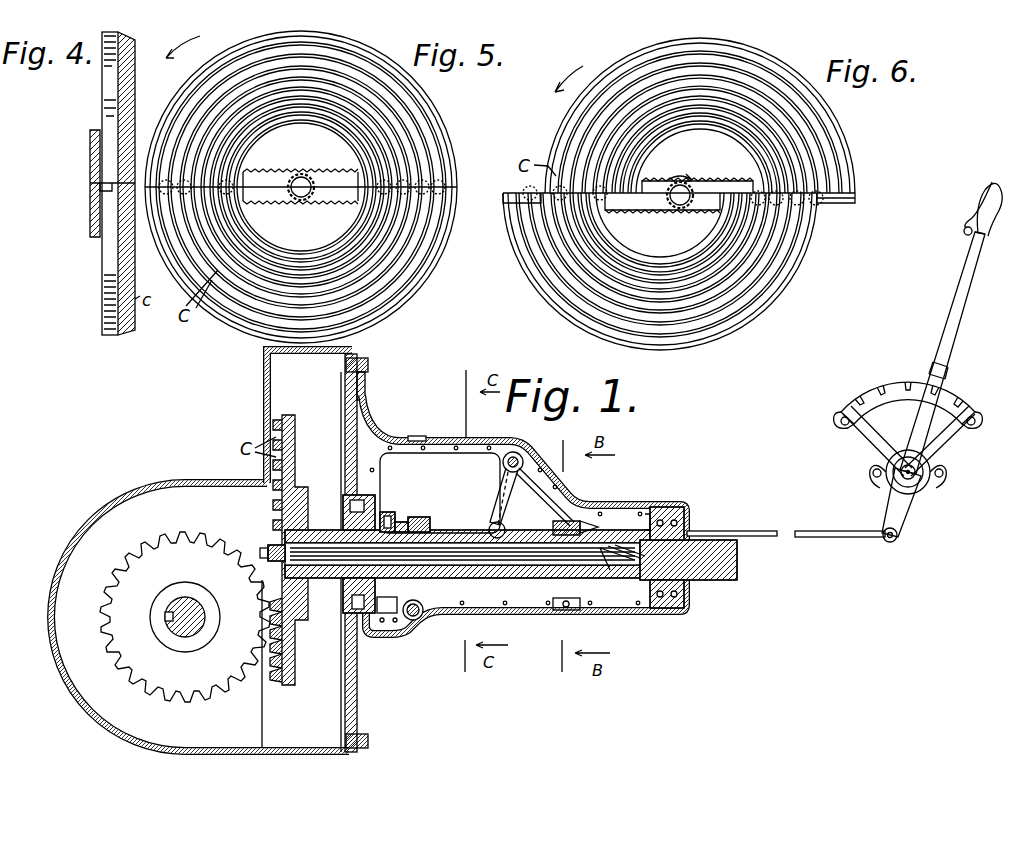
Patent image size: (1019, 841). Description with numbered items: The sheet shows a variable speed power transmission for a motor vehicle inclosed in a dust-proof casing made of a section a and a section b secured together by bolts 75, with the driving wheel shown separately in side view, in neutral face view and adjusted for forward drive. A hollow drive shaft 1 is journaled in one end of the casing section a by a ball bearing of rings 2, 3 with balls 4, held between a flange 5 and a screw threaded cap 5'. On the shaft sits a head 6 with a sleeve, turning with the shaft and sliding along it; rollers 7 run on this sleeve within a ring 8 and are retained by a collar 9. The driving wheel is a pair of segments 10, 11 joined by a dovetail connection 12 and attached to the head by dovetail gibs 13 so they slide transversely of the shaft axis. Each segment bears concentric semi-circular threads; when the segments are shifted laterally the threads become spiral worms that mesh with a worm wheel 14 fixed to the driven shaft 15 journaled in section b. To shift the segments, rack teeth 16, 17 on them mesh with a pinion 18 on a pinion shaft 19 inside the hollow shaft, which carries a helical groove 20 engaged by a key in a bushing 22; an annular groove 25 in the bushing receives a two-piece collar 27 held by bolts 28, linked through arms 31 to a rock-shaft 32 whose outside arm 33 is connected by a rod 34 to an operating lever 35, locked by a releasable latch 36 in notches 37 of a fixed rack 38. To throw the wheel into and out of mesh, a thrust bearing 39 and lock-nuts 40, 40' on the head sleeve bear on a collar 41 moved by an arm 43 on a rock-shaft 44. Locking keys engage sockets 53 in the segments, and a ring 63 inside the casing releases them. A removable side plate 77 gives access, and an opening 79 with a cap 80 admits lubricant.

In FIG. 1, the hollow drive shaft 1 is at (466, 517).
In FIG. 1, the ball bearing ring 2 is at (687, 507).
In FIG. 1, the ball bearing ring 3 is at (690, 584).
In FIG. 1, the balls 4 is at (690, 606).
In FIG. 1, the flange 5 is at (655, 502).
In FIG. 1, the screw threaded cap 5' is at (732, 516).
In FIG. 1, the head 6 is at (304, 492).
In FIG. 1, the rollers 7 is at (387, 512).
In FIG. 1, the ring 8 is at (343, 515).
In FIG. 1, the collar 9 is at (350, 505).
In FIG. 4, the wheel segment 10 is at (102, 291).
In FIG. 5, the wheel segment 10 is at (440, 252).
In FIG. 6, the wheel segment 10 is at (806, 262).
In FIG. 1, the wheel segment 10 is at (294, 664).
In FIG. 4, the wheel segment 11 is at (102, 94).
In FIG. 5, the wheel segment 11 is at (447, 144).
In FIG. 6, the wheel segment 11 is at (848, 168).
In FIG. 1, the wheel segment 11 is at (292, 462).
In FIG. 4, the dovetail connection 12 is at (96, 198).
In FIG. 6, the dovetail connection 12 is at (852, 204).
In FIG. 4, the dovetail gibs or guide-ways 13 is at (95, 169).
In FIG. 1, the dovetail gibs or guide-ways 13 is at (300, 596).
In FIG. 1, the worm wheel 14 is at (185, 617).
In FIG. 1, the driven shaft 15 is at (200, 640).
In FIG. 5, the rack teeth 16 is at (332, 203).
In FIG. 6, the rack teeth 16 is at (670, 210).
In FIG. 5, the rack teeth 17 is at (290, 172).
In FIG. 6, the rack teeth 17 is at (722, 181).
In FIG. 5, the pinion 18 is at (298, 197).
In FIG. 6, the pinion 18 is at (680, 180).
In FIG. 1, the pinion 18 is at (282, 547).
In FIG. 1, the pinion shaft 19 is at (297, 580).
In FIG. 1, the helical groove 20 is at (604, 578).
In FIG. 1, the bushing 22 is at (587, 521).
In FIG. 1, the annular groove 25 is at (554, 611).
In FIG. 1, the two-piece collar 27 is at (567, 612).
In FIG. 1, the bolts 28 is at (569, 519).
In FIG. 1, the arms 31 is at (545, 495).
In FIG. 1, the rock-shaft 32 is at (522, 459).
In FIG. 1, the arm 33 is at (497, 492).
In FIG. 1, the rod 34 is at (858, 505).
In FIG. 1, the operating lever 35 is at (950, 318).
In FIG. 1, the releasable latch 36 is at (955, 368).
In FIG. 1, the notches 37 is at (884, 392).
In FIG. 1, the fixed rack 38 is at (958, 398).
In FIG. 1, the thrust bearing 39 is at (396, 518).
In FIG. 1, the lock-nut 40 is at (434, 512).
In FIG. 1, the lock-nut 40' is at (425, 503).
In FIG. 1, the collar 41 is at (389, 614).
In FIG. 1, the arm 43 is at (413, 620).
In FIG. 1, the rock-shaft 44 is at (437, 615).
In FIG. 5, the sockets or recesses 53 is at (455, 186).
In FIG. 6, the sockets or recesses 53 is at (808, 220).
In FIG. 1, the ring 63 is at (347, 620).
In FIG. 1, the bolts 75 is at (369, 366).
In FIG. 1, the removable side plate 77 is at (440, 493).
In FIG. 1, the opening 79 is at (444, 437).
In FIG. 1, the removable screw threaded cap 80 is at (417, 436).
In FIG. 1, the casing section a is at (478, 440).
In FIG. 1, the casing section b is at (176, 482).